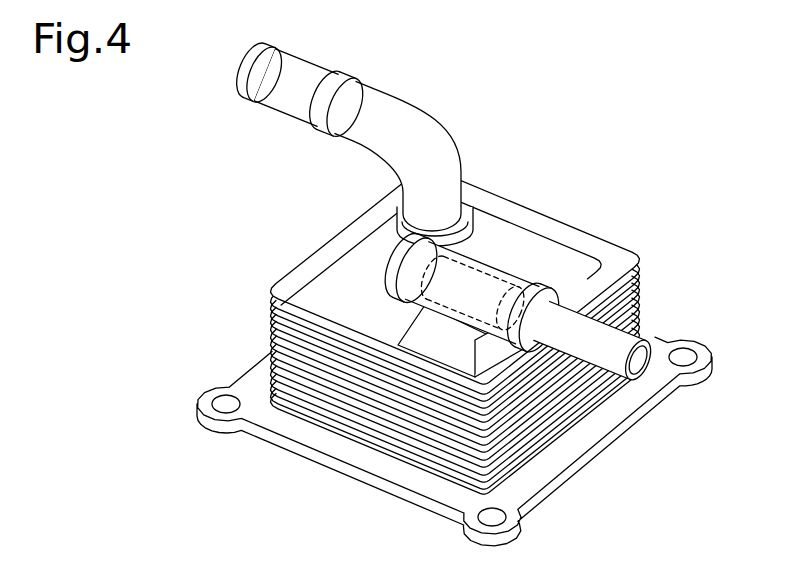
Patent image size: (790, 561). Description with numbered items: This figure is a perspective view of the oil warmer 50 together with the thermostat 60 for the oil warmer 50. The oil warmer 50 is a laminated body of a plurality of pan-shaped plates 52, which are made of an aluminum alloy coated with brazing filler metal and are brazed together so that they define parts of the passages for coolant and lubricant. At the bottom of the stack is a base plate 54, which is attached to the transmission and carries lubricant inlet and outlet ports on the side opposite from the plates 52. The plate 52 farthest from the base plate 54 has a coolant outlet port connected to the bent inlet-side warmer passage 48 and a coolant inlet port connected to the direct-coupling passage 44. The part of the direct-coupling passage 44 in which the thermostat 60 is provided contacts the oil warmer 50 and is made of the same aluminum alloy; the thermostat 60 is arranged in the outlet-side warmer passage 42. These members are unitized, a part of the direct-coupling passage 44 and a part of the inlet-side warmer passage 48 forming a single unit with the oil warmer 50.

The outlet-side warmer passage 42 is at (633, 337).
The direct-coupling passage 44 is at (632, 337).
The inlet-side warmer passage 48 is at (395, 113).
The oil warmer 50 is at (583, 270).
The pan-shaped plates 52 is at (306, 271).
The base plate 54 is at (558, 459).
The thermostat 60 is at (495, 266).